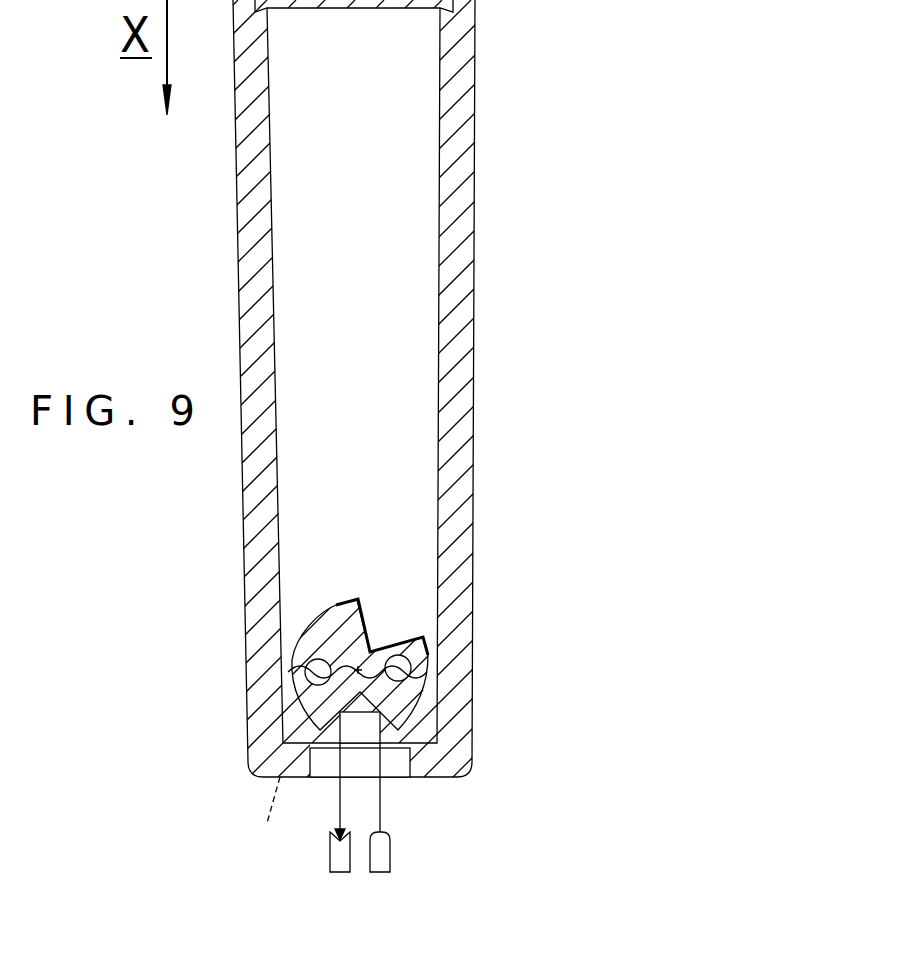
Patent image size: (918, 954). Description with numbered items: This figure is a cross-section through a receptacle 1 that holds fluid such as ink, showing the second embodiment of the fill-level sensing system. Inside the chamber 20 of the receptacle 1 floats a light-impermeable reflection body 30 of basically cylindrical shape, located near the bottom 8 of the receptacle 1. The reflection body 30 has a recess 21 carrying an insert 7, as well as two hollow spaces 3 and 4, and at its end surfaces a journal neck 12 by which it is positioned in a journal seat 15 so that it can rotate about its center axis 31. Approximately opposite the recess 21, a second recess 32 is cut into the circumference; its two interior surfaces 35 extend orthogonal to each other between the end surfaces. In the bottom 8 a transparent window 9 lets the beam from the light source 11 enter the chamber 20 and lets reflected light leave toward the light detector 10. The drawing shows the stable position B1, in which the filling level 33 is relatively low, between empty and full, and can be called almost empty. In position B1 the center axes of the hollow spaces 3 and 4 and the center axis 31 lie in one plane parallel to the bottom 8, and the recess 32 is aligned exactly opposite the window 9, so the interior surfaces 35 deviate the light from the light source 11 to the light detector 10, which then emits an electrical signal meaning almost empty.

The receptacle 1 is at (460, 142).
The chamber 20 is at (399, 311).
The position B1 is at (382, 518).
The recess 21 is at (406, 612).
The insert 7 is at (360, 610).
The reflection body 30 is at (308, 637).
The hollow space 3 is at (411, 667).
The hollow space 4 is at (305, 671).
The interior surfaces 35 is at (377, 702).
The filling level 33 is at (295, 693).
The recess 32 is at (388, 726).
The transparent window 9 is at (325, 748).
The bottom 8 is at (430, 760).
The center axis 31 is at (263, 826).
The light detector 10 is at (333, 872).
The light source 11 is at (383, 867).
The journal neck 12 is at (381, 942).
The journal seat 15 is at (145, 947).